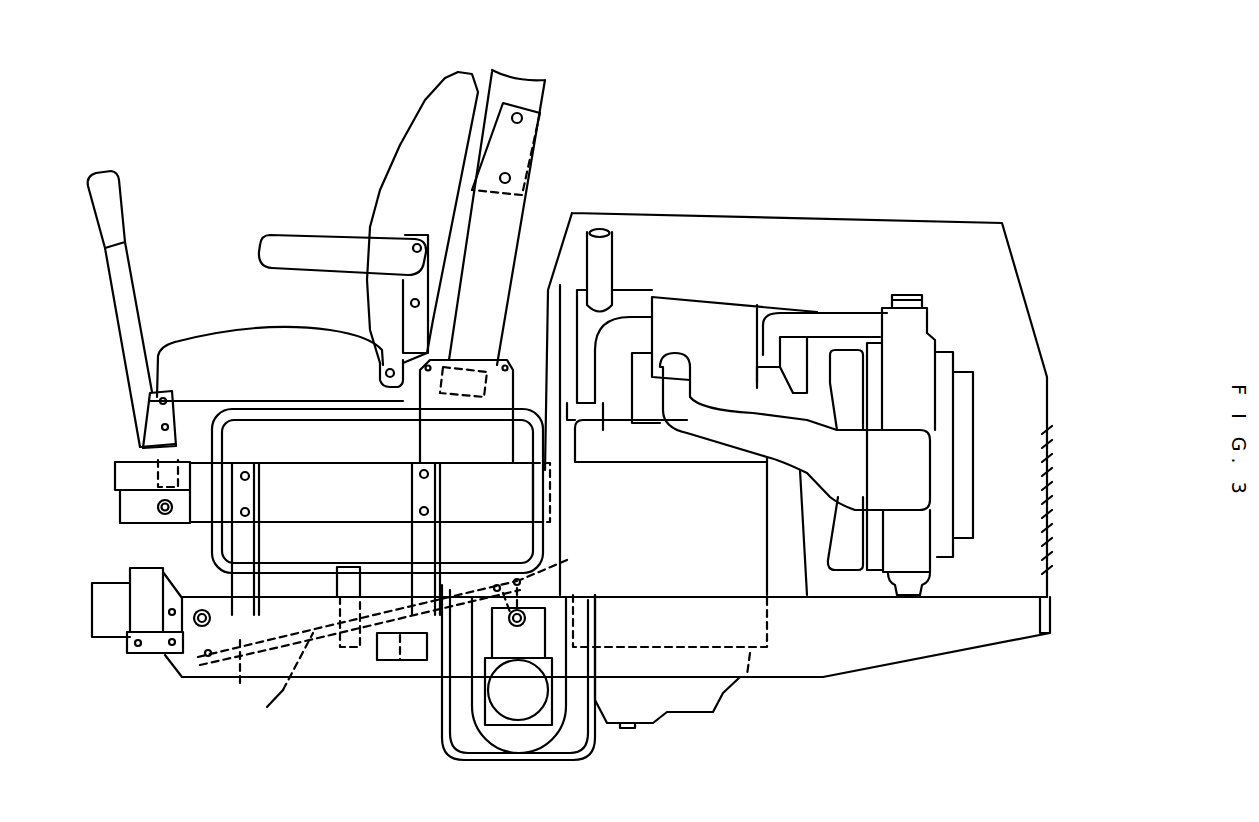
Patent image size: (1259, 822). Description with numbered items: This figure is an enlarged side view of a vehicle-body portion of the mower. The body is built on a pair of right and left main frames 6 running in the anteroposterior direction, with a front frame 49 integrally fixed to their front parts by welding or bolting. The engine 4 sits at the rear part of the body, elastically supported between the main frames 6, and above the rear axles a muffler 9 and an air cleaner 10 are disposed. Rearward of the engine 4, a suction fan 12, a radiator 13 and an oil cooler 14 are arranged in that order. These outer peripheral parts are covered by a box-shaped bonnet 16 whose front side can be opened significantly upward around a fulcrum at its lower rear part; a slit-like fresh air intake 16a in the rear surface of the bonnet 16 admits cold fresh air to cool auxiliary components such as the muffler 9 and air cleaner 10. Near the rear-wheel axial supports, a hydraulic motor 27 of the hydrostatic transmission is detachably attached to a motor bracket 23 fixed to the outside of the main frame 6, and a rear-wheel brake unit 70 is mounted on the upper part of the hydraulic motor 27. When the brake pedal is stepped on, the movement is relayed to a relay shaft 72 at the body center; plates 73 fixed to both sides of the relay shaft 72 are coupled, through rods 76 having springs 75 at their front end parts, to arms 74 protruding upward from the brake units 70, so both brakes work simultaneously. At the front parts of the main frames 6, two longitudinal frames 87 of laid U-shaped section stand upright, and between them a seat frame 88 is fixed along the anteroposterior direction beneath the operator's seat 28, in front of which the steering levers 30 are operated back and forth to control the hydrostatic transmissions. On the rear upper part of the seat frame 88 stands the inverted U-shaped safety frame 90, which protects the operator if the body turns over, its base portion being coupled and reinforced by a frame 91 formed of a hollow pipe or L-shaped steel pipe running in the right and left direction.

The engine 4 is at (714, 523).
The main frame 6 is at (887, 657).
The muffler 9 is at (637, 300).
The air cleaner 10 is at (757, 310).
The suction fan 12 is at (847, 357).
The radiator 13 is at (918, 318).
The oil cooler 14 is at (965, 403).
The bonnet 16 is at (716, 217).
The fresh air intake 16a is at (1053, 477).
The motor bracket 23 is at (595, 737).
The hydraulic motor 27 is at (501, 672).
The operator's seat 28 is at (262, 333).
The steering lever 30 is at (116, 220).
The front frame 49 is at (108, 582).
The rear-wheel brake unit 70 is at (386, 638).
The relay shaft 72 is at (200, 608).
The plate 73 is at (210, 653).
The arm 74 is at (563, 573).
The spring 75 is at (239, 675).
The rod 76 is at (286, 686).
The longitudinal frame 87 is at (262, 512).
The seat frame 88 is at (347, 474).
The safety frame 90 is at (512, 217).
The frame 91 is at (480, 362).